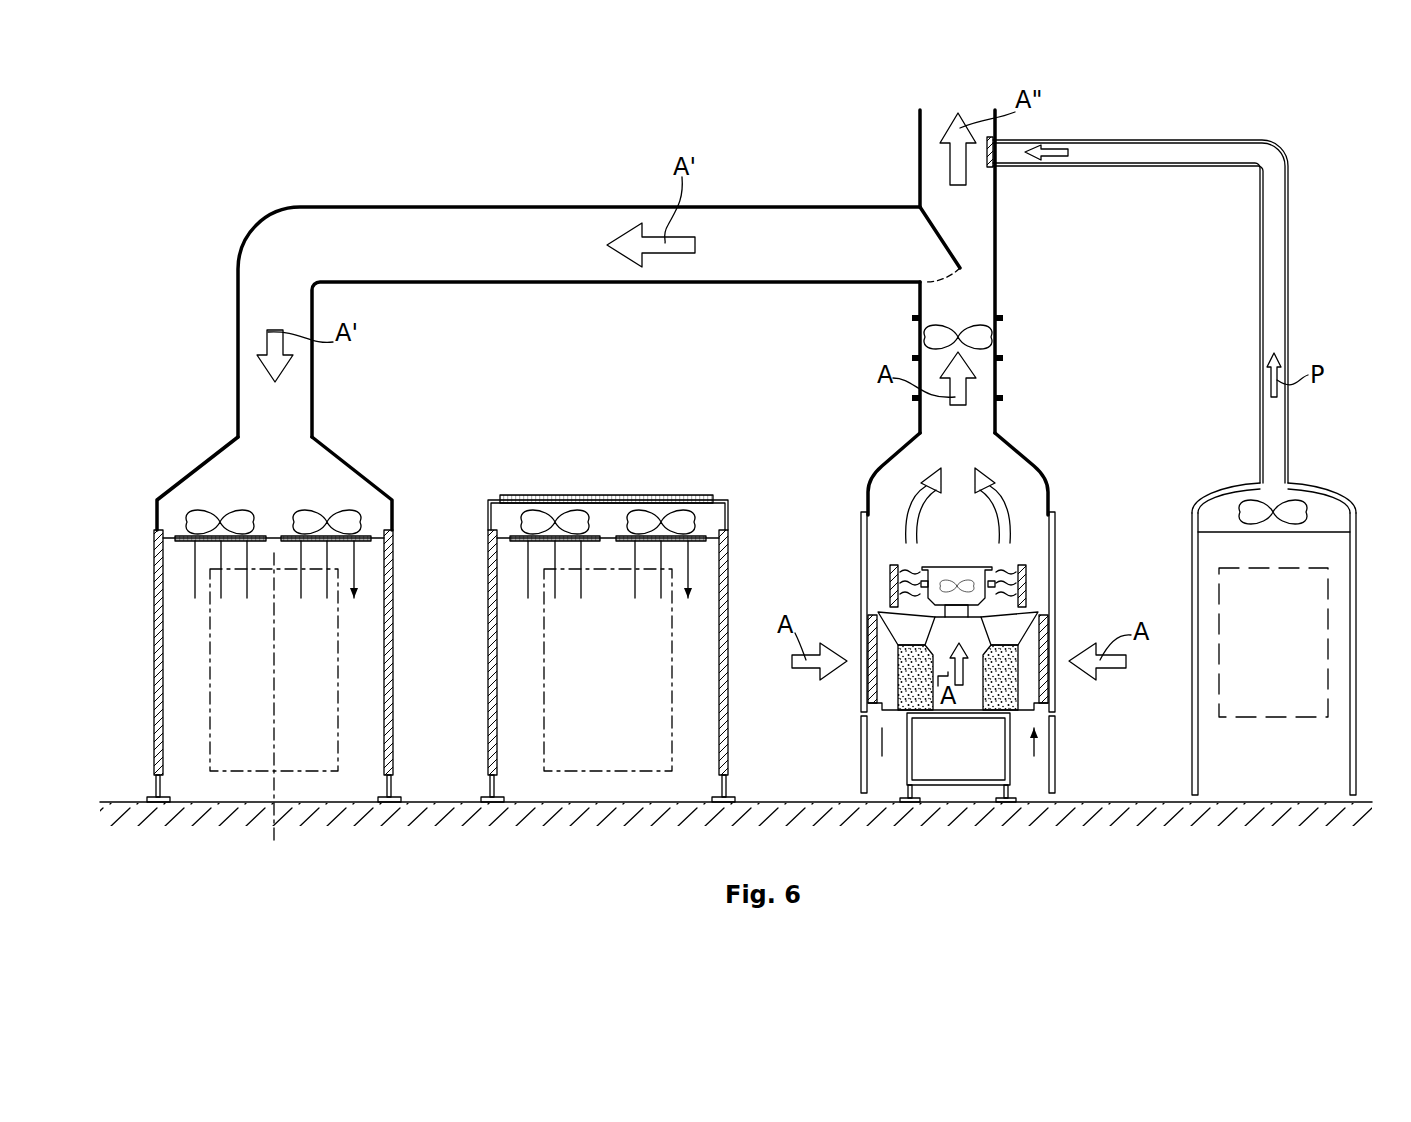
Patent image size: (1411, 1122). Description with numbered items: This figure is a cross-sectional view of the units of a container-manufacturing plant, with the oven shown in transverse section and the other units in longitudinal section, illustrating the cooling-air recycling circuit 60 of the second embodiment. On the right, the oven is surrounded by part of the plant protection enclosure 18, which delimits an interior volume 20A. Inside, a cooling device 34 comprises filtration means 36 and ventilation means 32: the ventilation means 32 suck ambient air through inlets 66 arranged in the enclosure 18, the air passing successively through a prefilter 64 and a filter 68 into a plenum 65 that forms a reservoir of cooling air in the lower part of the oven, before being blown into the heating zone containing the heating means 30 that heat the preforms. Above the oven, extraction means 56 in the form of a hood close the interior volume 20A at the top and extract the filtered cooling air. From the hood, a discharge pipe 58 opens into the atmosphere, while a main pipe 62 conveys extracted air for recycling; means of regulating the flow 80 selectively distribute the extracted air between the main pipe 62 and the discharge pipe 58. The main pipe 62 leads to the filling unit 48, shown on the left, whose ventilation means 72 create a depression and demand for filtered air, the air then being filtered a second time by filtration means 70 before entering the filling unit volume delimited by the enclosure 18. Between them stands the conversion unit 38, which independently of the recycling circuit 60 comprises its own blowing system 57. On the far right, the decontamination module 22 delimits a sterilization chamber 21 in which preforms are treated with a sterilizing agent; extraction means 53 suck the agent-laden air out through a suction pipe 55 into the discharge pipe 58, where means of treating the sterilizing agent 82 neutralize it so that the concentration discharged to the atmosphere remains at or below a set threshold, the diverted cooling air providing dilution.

The plant protection enclosure 18 is at (158, 650).
The interior volume 20A is at (901, 489).
The sterilization chamber 21 is at (1290, 648).
The decontamination module 22 is at (1357, 668).
The heating means 30 is at (893, 582).
The ventilation means 32 is at (940, 563).
The cooling device 34 is at (1003, 627).
The filtration means 36 is at (880, 758).
The conversion unit 38 is at (485, 552).
The filling unit 48 is at (150, 521).
The extraction means 53 is at (1232, 490).
The suction pipe 55 is at (1272, 210).
The extraction means 56 is at (1052, 497).
The blowing system 57 is at (597, 492).
The discharge pipe 58 is at (920, 138).
The recycling circuit 60 is at (1012, 298).
The main pipe 62 is at (428, 237).
The prefilter 64 is at (870, 698).
The plenum 65 is at (937, 633).
The inlet 66 is at (862, 674).
The filter 68 is at (990, 695).
The filtration means 70 is at (185, 545).
The ventilation means 72 is at (318, 518).
The means of regulating the flow 80 is at (938, 242).
The means of treating the sterilizing agent 82 is at (993, 152).